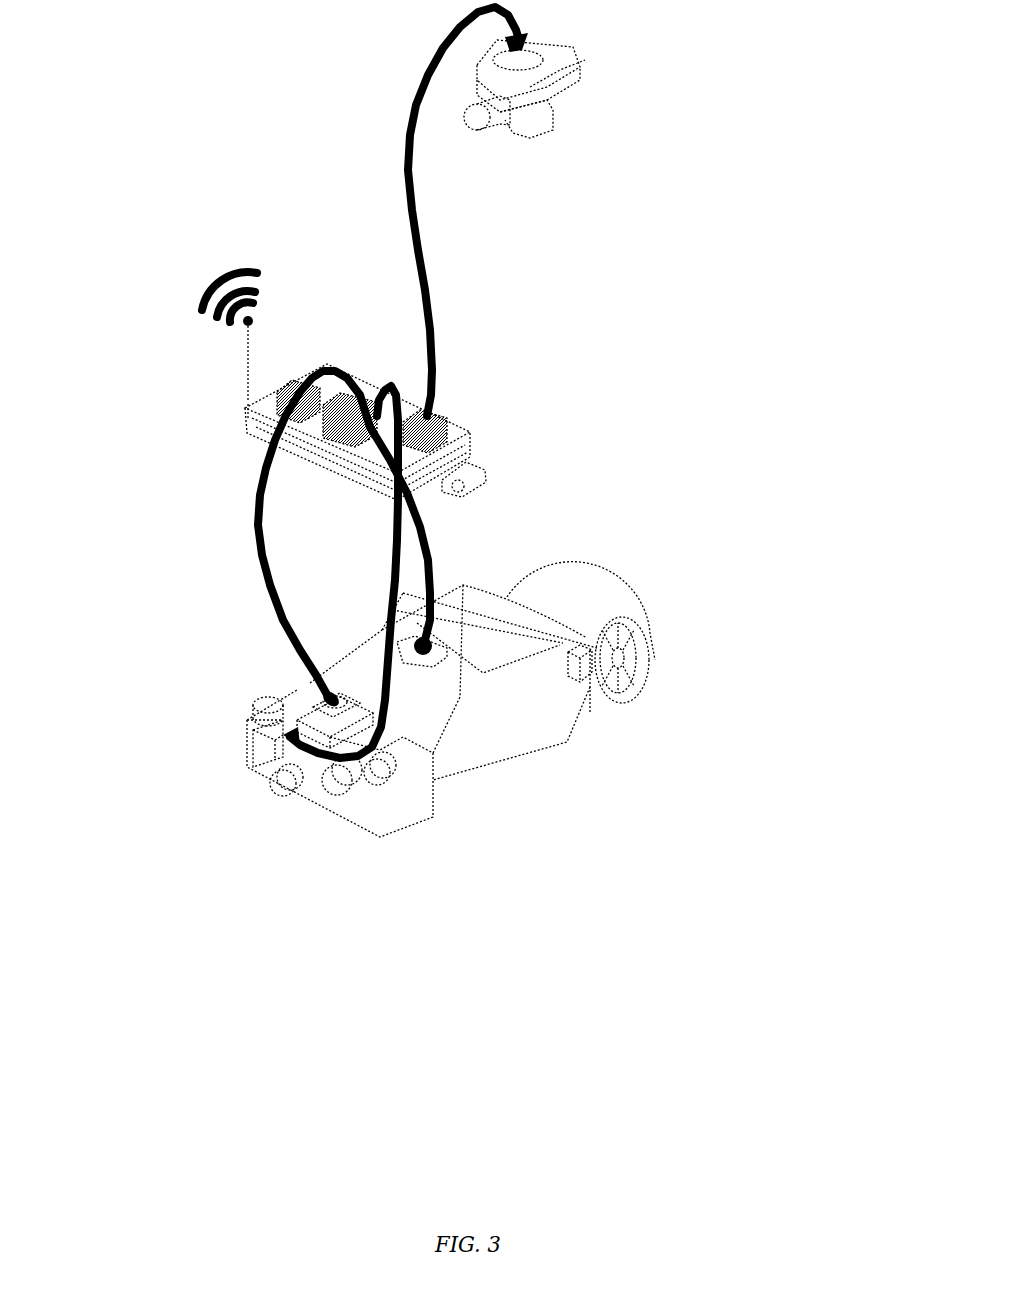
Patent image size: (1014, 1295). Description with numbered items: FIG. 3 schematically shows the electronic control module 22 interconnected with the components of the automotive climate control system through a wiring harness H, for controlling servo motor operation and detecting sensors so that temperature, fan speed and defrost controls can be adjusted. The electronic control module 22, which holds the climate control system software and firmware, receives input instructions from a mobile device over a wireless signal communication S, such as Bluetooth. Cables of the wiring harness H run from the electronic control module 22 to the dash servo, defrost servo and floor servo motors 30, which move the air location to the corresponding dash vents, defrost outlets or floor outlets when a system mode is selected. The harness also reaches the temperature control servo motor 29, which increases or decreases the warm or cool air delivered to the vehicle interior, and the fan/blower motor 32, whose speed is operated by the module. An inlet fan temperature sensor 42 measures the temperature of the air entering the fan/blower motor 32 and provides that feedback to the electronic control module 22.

The electronic control module 22 is at (502, 454).
The temperature control servo motor 29 is at (675, 145).
The dash, defrost and floor servo motors 30 is at (518, 780).
The fan/blower motor 32 is at (604, 600).
The inlet fan temperature sensor 42 is at (622, 656).
The wireless signal communication S is at (190, 298).
The wiring harness H is at (413, 362).